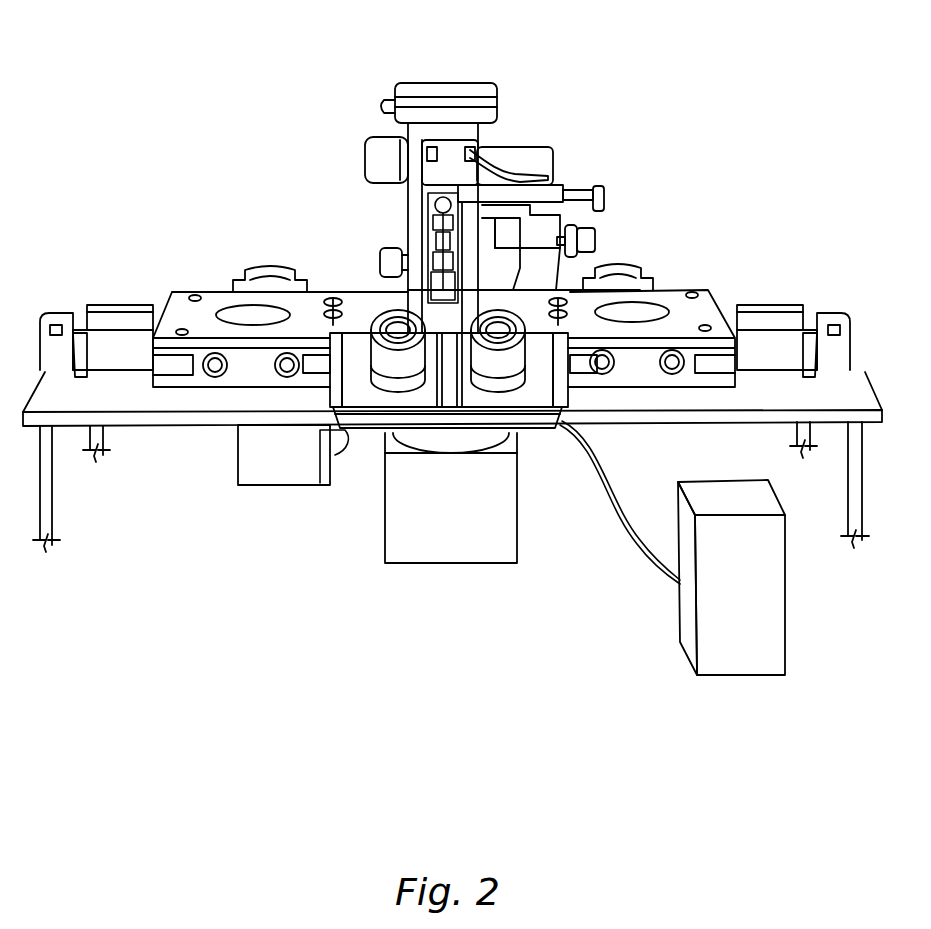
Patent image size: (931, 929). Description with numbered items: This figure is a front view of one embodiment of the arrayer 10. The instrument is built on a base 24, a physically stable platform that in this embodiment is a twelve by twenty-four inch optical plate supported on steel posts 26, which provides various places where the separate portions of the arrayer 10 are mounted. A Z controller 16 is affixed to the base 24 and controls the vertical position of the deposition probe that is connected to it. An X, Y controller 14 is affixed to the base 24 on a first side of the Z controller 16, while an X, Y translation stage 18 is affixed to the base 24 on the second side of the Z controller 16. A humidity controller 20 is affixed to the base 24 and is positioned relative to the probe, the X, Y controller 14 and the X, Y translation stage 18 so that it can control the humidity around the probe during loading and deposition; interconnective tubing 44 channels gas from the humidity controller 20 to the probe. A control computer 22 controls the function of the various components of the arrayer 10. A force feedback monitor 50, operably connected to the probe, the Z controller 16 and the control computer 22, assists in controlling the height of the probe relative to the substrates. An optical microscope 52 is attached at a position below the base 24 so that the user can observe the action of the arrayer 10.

The arrayer 10 is at (273, 28).
The X, Y controller 14 is at (115, 298).
The Z controller 16 is at (443, 278).
The X, Y translation stage 18 is at (793, 295).
The humidity controller 20 is at (275, 485).
The control computer 22 is at (752, 566).
The base 24 is at (630, 415).
The steel posts 26 is at (49, 473).
The interconnective tubing 44 is at (345, 435).
The force feedback monitor 50 is at (467, 222).
The optical microscope 52 is at (440, 585).